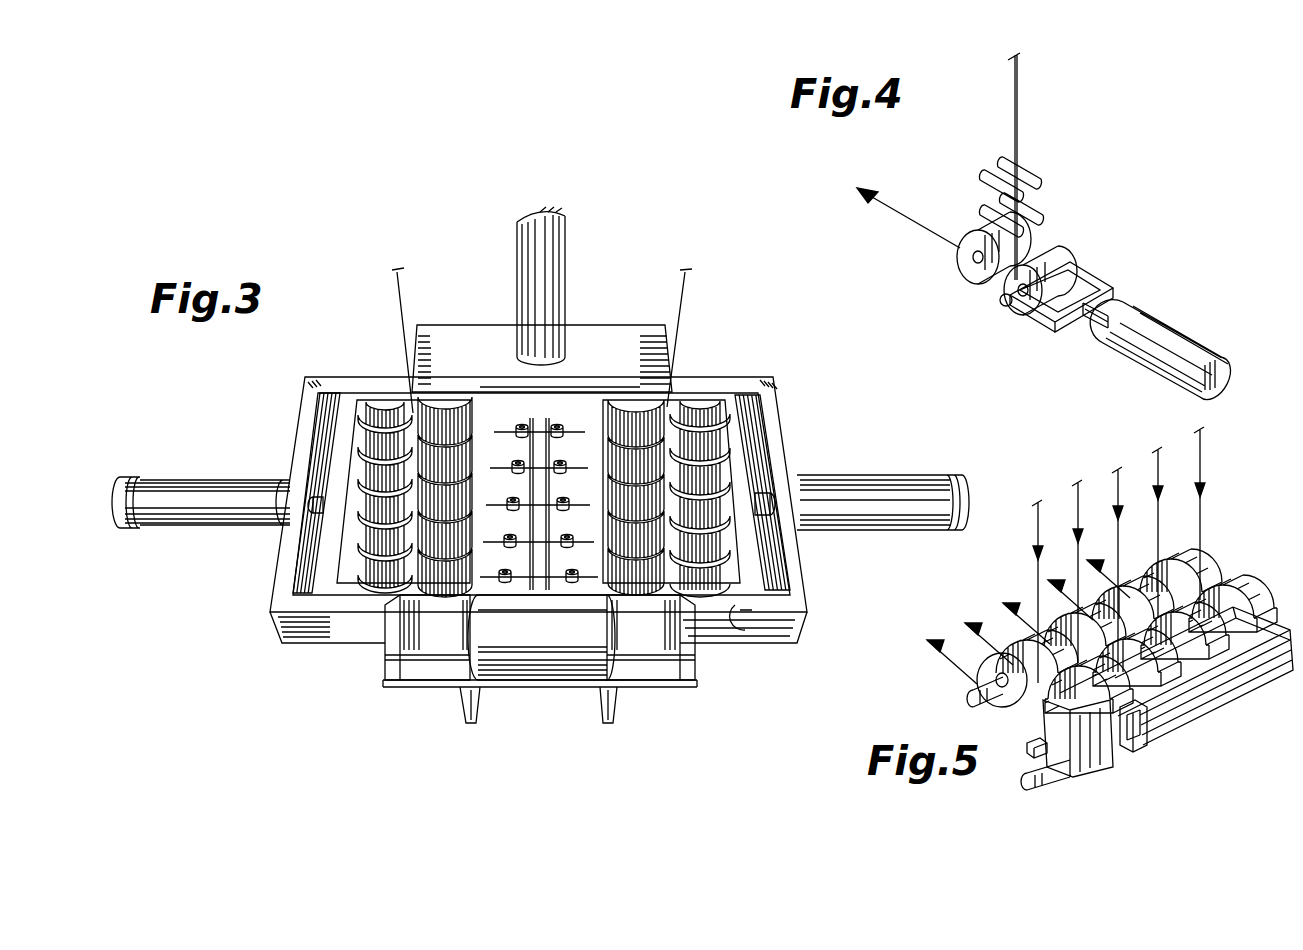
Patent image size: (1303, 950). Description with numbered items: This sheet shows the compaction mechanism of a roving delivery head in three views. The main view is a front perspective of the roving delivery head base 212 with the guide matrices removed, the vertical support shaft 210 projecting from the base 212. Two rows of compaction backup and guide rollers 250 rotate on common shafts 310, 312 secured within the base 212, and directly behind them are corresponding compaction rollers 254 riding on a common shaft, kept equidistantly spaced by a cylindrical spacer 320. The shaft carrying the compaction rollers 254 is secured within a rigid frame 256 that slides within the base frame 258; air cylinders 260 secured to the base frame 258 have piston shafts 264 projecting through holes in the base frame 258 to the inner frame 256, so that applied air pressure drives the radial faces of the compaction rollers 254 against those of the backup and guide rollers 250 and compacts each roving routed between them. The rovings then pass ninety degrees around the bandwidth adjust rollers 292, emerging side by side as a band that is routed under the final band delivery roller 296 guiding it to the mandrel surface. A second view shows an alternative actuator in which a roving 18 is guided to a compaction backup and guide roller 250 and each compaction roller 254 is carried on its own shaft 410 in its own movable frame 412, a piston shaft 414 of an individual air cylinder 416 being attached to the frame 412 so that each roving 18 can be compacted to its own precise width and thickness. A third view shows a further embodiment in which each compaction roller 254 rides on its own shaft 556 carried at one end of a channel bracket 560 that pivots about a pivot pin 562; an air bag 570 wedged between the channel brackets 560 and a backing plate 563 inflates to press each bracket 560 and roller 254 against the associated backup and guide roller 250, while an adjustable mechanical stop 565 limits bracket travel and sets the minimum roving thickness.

In FIG. 4, the roving 18 is at (1017, 100).
In FIG. 5, the roving 18 is at (1220, 490).
In FIG. 3, the vertical support shaft 210 is at (555, 250).
In FIG. 3, the roving delivery head base 212 is at (420, 345).
In FIG. 3, the compaction backup and guide rollers 250 is at (445, 400).
In FIG. 4, the compaction backup and guide rollers 250 is at (1023, 243).
In FIG. 5, the compaction backup and guide rollers 250 is at (993, 647).
In FIG. 3, the compaction rollers 254 is at (377, 408).
In FIG. 4, the compaction rollers 254 is at (1063, 253).
In FIG. 5, the compaction rollers 254 is at (978, 677).
In FIG. 3, the rigid frame 256 is at (330, 570).
In FIG. 3, the base frame 258 is at (308, 425).
In FIG. 3, the air cylinders 260 is at (165, 480).
In FIG. 3, the piston shafts 264 is at (315, 518).
In FIG. 3, the bandwidth adjust rollers 292 is at (567, 430).
In FIG. 3, the final band delivery roller 296 is at (500, 650).
In FIG. 3, the common shaft 310 is at (643, 590).
In FIG. 3, the common shaft 312 is at (387, 607).
In FIG. 3, the cylindrical spacer 320 is at (752, 612).
In FIG. 4, the shaft 410 is at (1013, 297).
In FIG. 4, the movable frame 412 is at (1090, 273).
In FIG. 4, the piston shaft 414 is at (1092, 323).
In FIG. 4, the air cylinder 416 is at (1140, 367).
In FIG. 5, the shaft 556 is at (1003, 713).
In FIG. 5, the channel bracket 560 is at (1093, 737).
In FIG. 5, the pivot pin 562 is at (1030, 777).
In FIG. 5, the backing plate 563 is at (1210, 687).
In FIG. 5, the adjustable mechanical stop 565 is at (1033, 740).
In FIG. 5, the air bag 570 is at (1150, 720).